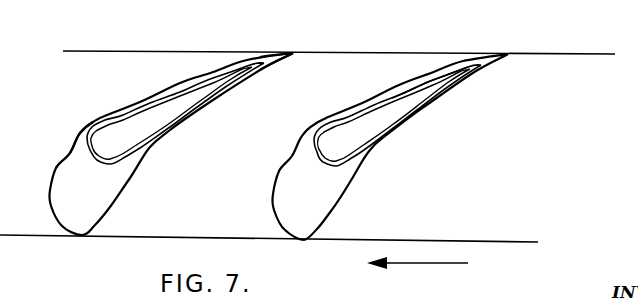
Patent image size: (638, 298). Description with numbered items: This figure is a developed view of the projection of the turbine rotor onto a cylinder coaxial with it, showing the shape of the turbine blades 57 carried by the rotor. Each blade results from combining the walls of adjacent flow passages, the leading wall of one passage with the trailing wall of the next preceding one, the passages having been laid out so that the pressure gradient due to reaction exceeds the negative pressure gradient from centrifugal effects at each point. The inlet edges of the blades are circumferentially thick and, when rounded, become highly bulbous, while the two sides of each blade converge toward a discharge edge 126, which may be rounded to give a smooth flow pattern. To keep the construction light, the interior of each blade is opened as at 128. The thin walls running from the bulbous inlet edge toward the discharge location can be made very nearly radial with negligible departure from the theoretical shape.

The discharge edge 126 is at (292, 53).
The blade interior opening 128 is at (98, 139).
The turbine blade 57 is at (413, 78).